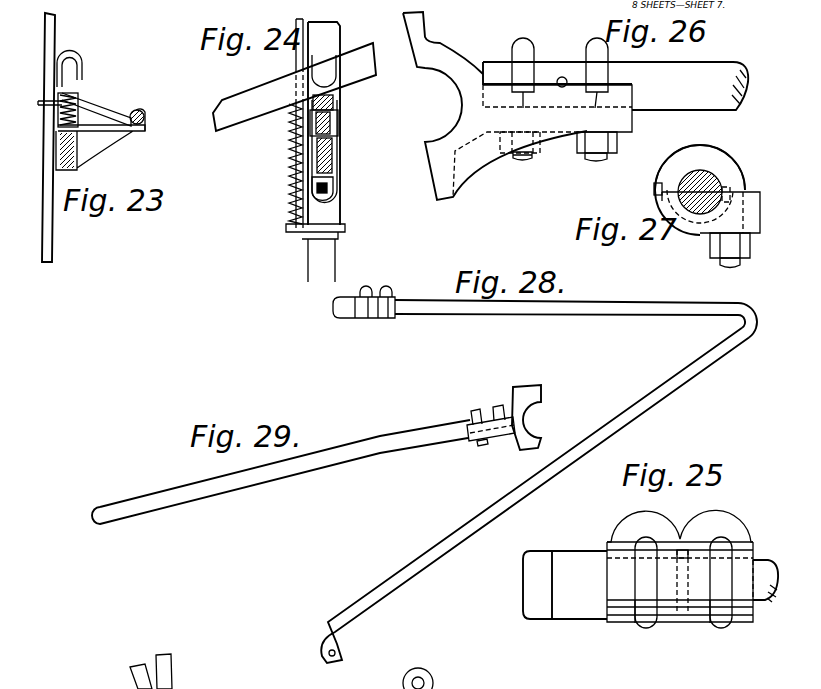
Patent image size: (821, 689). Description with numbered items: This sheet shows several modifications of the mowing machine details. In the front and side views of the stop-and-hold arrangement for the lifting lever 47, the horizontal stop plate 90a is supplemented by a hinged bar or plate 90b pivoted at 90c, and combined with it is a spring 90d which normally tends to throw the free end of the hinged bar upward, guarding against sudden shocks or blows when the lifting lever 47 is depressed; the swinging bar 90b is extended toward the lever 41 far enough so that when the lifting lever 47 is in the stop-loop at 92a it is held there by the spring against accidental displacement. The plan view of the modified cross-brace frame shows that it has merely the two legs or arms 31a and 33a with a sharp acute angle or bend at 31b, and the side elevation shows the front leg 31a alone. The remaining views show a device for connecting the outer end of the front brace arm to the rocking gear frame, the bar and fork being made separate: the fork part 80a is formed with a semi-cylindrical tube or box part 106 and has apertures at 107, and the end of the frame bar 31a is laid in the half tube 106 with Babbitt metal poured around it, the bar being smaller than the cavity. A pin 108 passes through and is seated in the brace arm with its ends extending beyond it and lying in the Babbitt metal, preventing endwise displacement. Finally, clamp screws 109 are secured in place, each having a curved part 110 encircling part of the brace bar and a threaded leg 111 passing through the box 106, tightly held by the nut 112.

In FIG. 23, the lever 41 is at (46, 248).
In FIG. 24, the lever 41 is at (308, 265).
In FIG. 24, the lifting lever 47 is at (235, 100).
In FIG. 23, the stop-loop 92a is at (76, 55).
In FIG. 24, the stop-loop 92a is at (328, 67).
In FIG. 23, the horizontal stop plate 90a is at (112, 131).
In FIG. 24, the horizontal stop plate 90a is at (333, 145).
In FIG. 23, the hinged bar or plate 90b is at (111, 104).
In FIG. 24, the hinged bar or plate 90b is at (337, 101).
In FIG. 23, the pivot 90c is at (147, 110).
In FIG. 24, the pivot 90c is at (338, 127).
In FIG. 23, the spring 90d is at (58, 117).
In FIG. 26, the leg of the cross brace frame 31a is at (713, 72).
In FIG. 27, the leg of the cross brace frame 31a is at (707, 175).
In FIG. 28, the leg of the cross brace frame 31a is at (597, 317).
In FIG. 29, the leg of the cross brace frame 31a is at (407, 448).
In FIG. 25, the leg of the cross brace frame 31a is at (780, 552).
In FIG. 28, the bend 31b is at (735, 326).
In FIG. 28, the leg of the cross brace frame 33a is at (471, 533).
In FIG. 26, the fork part 80a is at (460, 103).
In FIG. 29, the fork part 80a is at (534, 417).
In FIG. 26, the semi-cylindrical tube or box part 106 is at (632, 116).
In FIG. 27, the semi-cylindrical tube or box part 106 is at (682, 231).
In FIG. 29, the semi-cylindrical tube or box part 106 is at (468, 440).
In FIG. 25, the semi-cylindrical tube or box part 106 is at (687, 620).
In FIG. 27, the apertures 107 is at (760, 220).
In FIG. 26, the pin 108 is at (563, 77).
In FIG. 27, the pin 108 is at (654, 189).
In FIG. 25, the pin 108 is at (680, 550).
In FIG. 26, the clamp screws 109 is at (538, 43).
In FIG. 27, the clamp screws 109 is at (745, 182).
In FIG. 28, the clamp screws 109 is at (377, 290).
In FIG. 29, the clamp screws 109 is at (477, 412).
In FIG. 25, the clamp screws 109 is at (755, 630).
In FIG. 26, the curved part 110 is at (559, 110).
In FIG. 27, the curved part 110 is at (656, 173).
In FIG. 25, the curved part 110 is at (720, 650).
In FIG. 26, the threaded leg 111 is at (597, 162).
In FIG. 27, the threaded leg 111 is at (725, 270).
In FIG. 26, the nut 112 is at (533, 150).
In FIG. 27, the nut 112 is at (750, 250).